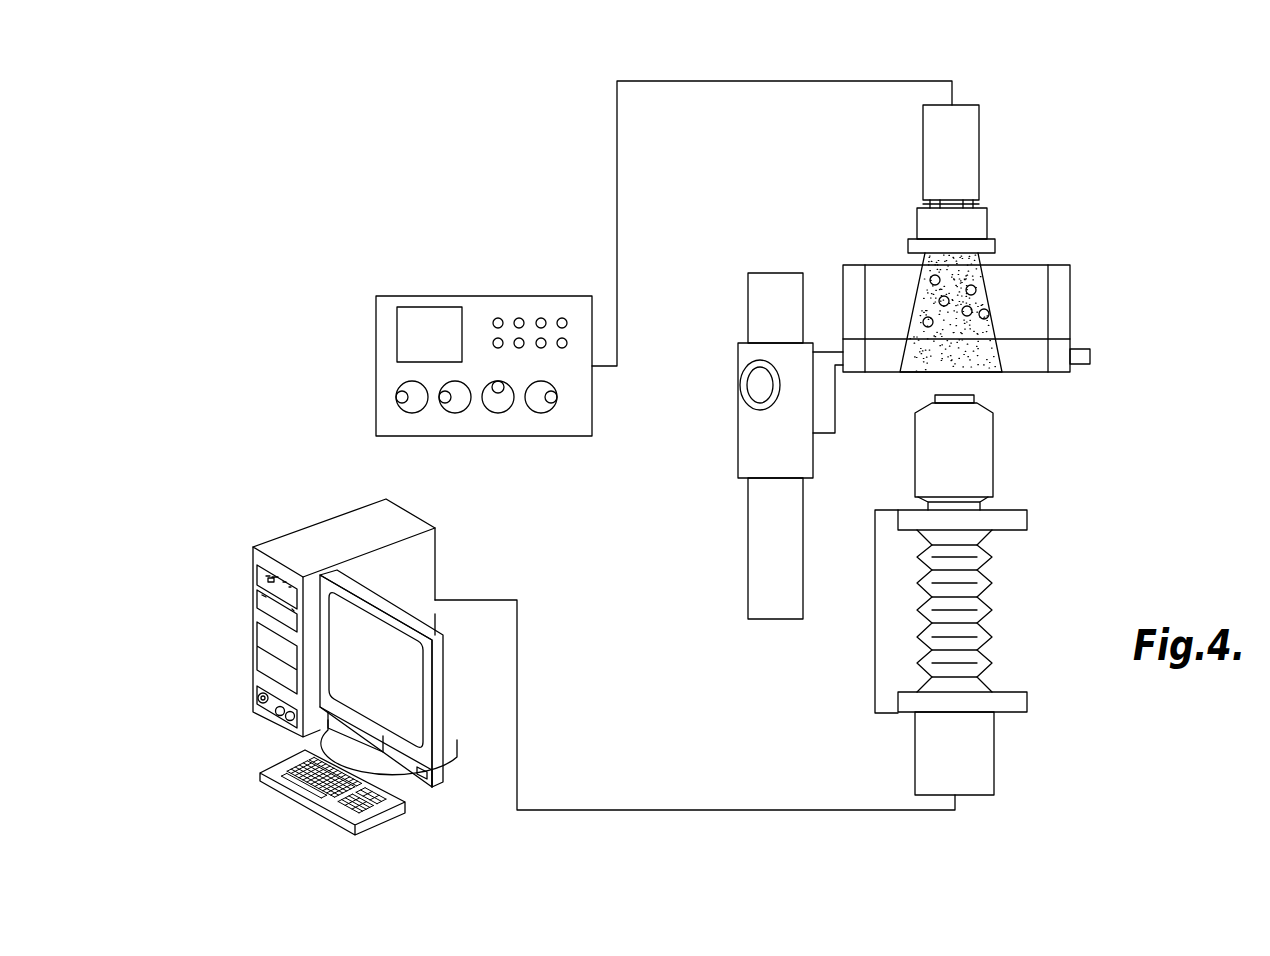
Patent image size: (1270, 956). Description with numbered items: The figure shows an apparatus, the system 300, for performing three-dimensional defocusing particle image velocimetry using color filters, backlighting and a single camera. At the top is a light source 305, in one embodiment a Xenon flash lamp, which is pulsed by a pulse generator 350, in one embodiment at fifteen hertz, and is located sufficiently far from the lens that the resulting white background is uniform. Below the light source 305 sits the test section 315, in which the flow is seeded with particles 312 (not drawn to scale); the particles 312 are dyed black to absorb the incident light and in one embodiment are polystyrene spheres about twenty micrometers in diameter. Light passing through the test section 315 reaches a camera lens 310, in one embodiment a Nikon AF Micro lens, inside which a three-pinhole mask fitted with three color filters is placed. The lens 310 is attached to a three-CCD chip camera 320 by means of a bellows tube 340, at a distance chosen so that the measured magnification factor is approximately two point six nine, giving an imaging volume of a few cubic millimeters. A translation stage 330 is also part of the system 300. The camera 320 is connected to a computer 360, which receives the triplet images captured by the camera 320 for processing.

The system 300 is at (333, 193).
The light source 305 is at (977, 127).
The camera lens 310 is at (992, 447).
The particles 312 is at (970, 290).
The test section 315 is at (1033, 285).
The 3-CCD chip camera 320 is at (993, 758).
The translation stage 330 is at (748, 514).
The bellows tube 340 is at (992, 605).
The pulse generator 350 is at (376, 330).
The computer 360 is at (246, 578).